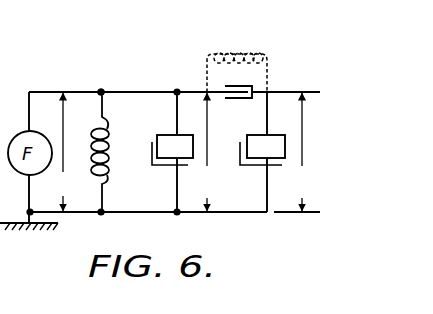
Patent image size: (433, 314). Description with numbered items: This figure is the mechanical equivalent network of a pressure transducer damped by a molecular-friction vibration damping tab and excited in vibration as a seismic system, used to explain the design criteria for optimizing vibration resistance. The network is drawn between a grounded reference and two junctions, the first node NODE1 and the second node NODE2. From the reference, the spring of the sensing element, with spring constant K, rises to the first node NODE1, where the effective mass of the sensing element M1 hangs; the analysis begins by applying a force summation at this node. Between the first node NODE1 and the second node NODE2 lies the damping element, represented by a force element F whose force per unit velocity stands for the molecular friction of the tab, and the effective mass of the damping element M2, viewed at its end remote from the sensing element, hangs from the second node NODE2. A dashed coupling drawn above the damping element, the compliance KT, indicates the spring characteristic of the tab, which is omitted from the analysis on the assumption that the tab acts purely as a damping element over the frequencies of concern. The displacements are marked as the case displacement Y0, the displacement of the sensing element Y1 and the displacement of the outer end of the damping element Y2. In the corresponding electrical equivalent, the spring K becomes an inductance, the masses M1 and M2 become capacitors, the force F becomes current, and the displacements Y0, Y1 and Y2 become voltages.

The node 1 NODE1 is at (176, 90).
The node 2 NODE2 is at (268, 92).
The spring constant of the sensing element K is at (113, 140).
The compliance of the damping element KT is at (222, 53).
The force F is at (233, 98).
The effective mass of the sensing element M1 is at (172, 150).
The effective mass of damping element M2 is at (262, 150).
The case displacement Y0 is at (64, 152).
The displacement of sensing element Y1 is at (207, 152).
The displacement of outer end of damping element Y2 is at (300, 152).